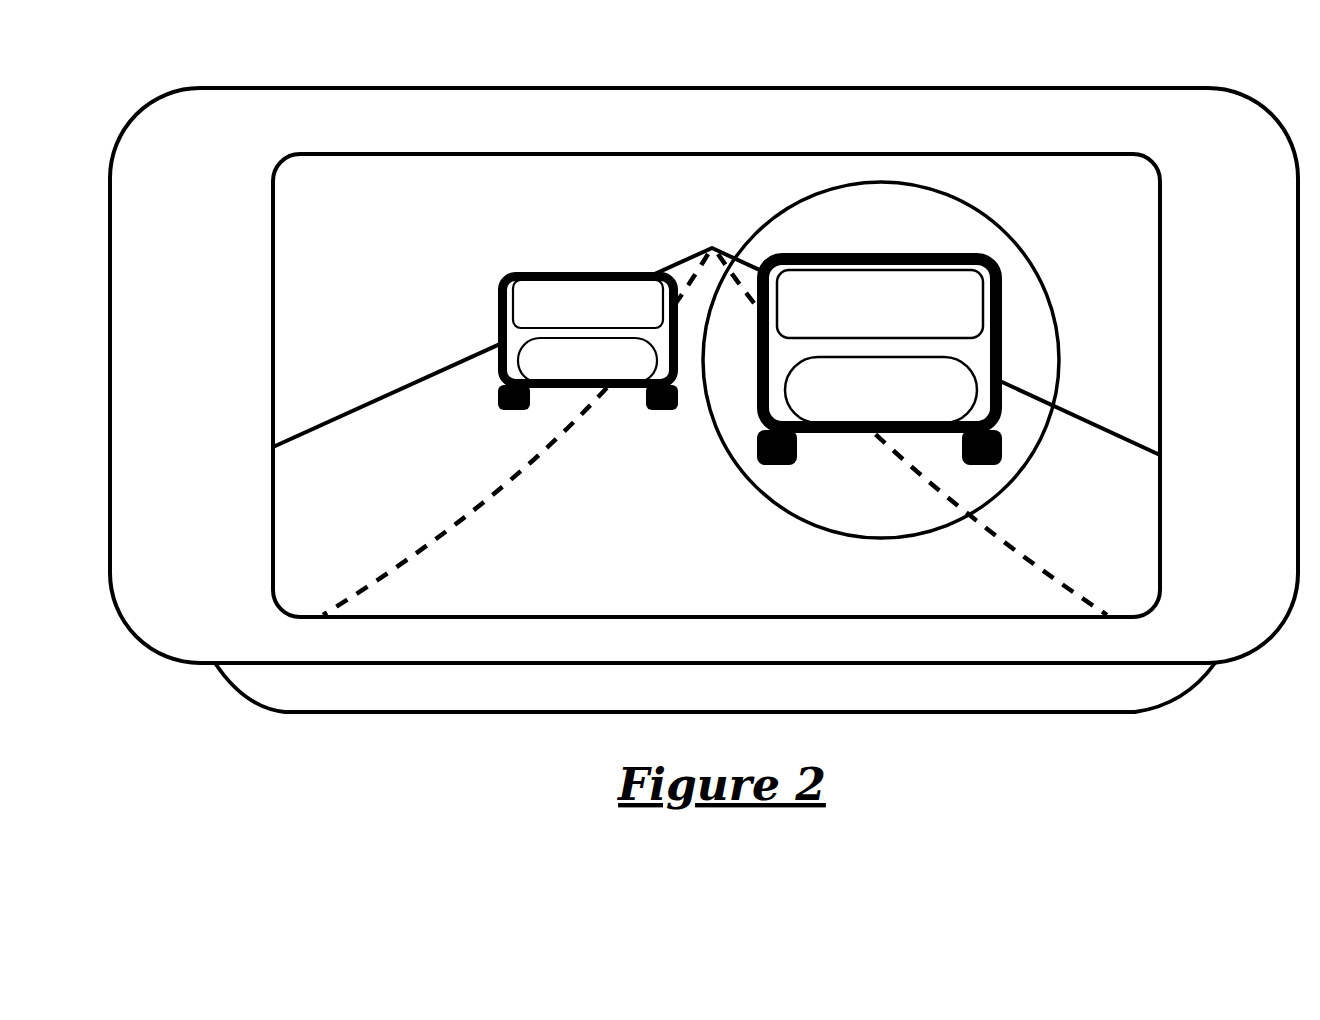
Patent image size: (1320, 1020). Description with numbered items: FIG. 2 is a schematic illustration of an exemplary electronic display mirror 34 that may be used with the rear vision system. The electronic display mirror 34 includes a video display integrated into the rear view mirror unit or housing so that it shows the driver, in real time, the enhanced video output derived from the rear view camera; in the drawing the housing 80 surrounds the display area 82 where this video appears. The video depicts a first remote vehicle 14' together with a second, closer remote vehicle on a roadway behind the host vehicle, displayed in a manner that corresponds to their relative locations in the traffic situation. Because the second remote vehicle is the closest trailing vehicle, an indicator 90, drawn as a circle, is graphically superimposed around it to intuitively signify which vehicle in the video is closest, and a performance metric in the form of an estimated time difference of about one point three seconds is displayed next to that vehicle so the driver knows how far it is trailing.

The electronic display mirror 34 is at (282, 717).
The display housing 80 is at (1230, 648).
The display screen 82 is at (1122, 592).
The remote vehicle 14' is at (538, 333).
The indicator 90 is at (982, 212).